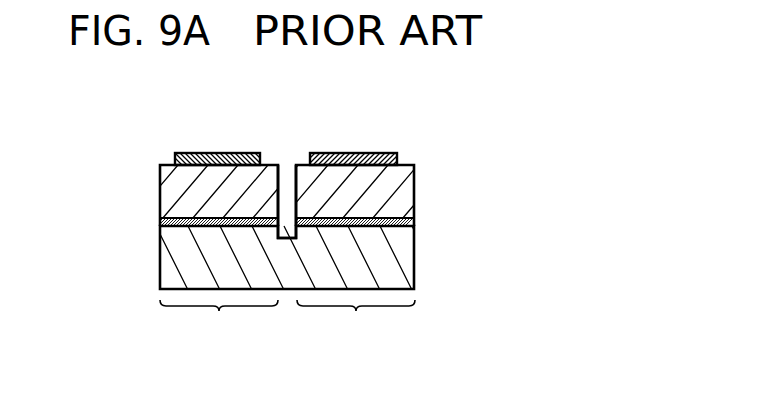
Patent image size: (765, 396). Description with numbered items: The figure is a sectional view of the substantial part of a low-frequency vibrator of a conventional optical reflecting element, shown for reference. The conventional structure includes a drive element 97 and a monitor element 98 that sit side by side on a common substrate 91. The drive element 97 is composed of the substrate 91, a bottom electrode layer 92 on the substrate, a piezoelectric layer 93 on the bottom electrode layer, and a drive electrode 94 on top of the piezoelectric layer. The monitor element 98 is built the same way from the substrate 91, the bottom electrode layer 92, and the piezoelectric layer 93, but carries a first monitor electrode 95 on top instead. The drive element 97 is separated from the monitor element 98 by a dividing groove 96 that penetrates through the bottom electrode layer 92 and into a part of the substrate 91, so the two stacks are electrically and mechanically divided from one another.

The substrate 91 is at (173, 265).
The bottom electrode layer 92 is at (170, 224).
The piezoelectric layer 93 is at (175, 190).
The drive electrode 94 is at (203, 162).
The first monitor electrode 95 is at (373, 163).
The dividing groove 96 is at (286, 167).
The drive element 97 is at (219, 322).
The monitor element 98 is at (356, 322).